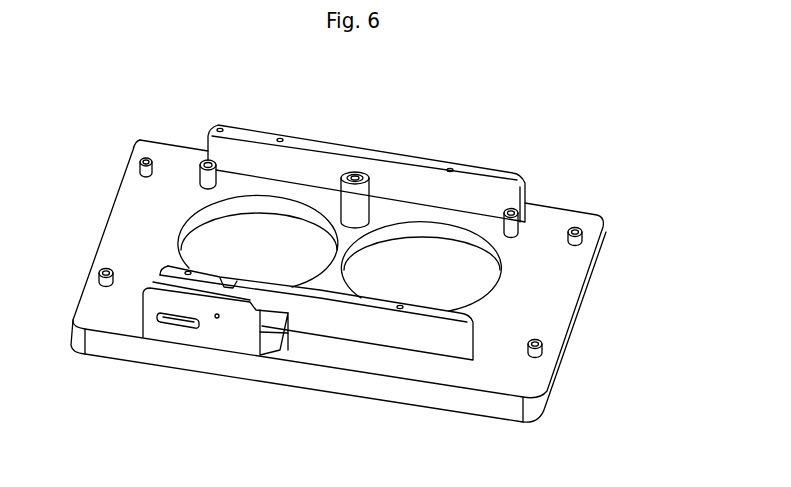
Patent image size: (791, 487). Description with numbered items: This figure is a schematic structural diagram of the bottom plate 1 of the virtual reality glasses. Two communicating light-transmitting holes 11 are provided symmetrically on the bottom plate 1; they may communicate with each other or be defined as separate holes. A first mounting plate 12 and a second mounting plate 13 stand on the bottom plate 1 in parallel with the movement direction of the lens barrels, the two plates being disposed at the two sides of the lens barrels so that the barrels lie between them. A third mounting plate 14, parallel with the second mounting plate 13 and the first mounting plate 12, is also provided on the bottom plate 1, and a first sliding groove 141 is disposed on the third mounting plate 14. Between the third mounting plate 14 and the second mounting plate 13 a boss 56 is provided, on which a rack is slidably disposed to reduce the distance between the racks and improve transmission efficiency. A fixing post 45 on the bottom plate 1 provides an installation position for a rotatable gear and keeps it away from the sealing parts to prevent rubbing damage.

The bottom plate 1 is at (457, 373).
The light-transmitting hole 11 is at (452, 259).
The first mounting plate 12 is at (413, 178).
The second mounting plate 13 is at (360, 320).
The third mounting plate 14 is at (238, 369).
The first sliding groove 141 is at (172, 324).
The fixing post 45 is at (358, 176).
The boss 56 is at (287, 340).